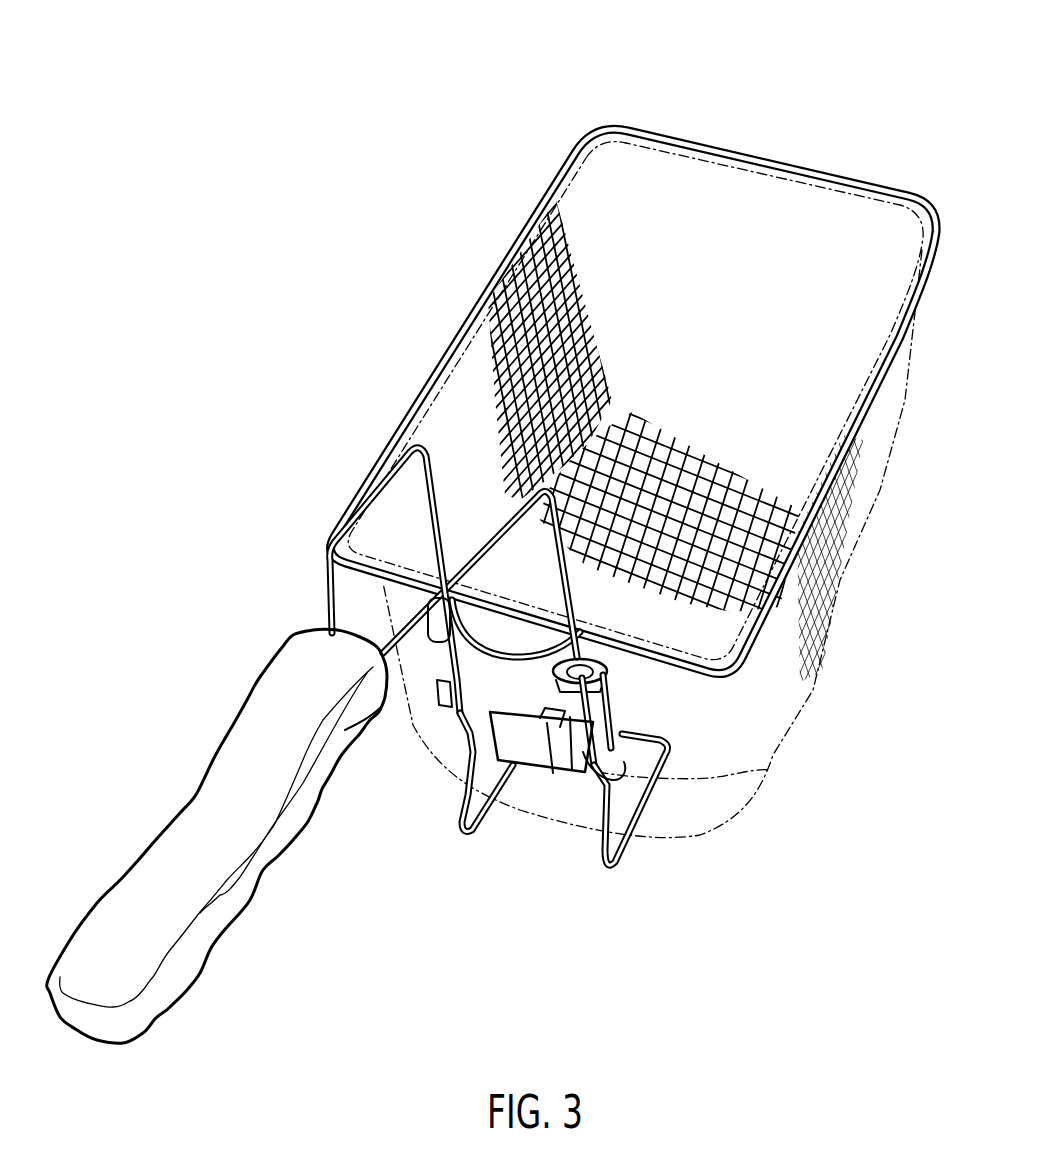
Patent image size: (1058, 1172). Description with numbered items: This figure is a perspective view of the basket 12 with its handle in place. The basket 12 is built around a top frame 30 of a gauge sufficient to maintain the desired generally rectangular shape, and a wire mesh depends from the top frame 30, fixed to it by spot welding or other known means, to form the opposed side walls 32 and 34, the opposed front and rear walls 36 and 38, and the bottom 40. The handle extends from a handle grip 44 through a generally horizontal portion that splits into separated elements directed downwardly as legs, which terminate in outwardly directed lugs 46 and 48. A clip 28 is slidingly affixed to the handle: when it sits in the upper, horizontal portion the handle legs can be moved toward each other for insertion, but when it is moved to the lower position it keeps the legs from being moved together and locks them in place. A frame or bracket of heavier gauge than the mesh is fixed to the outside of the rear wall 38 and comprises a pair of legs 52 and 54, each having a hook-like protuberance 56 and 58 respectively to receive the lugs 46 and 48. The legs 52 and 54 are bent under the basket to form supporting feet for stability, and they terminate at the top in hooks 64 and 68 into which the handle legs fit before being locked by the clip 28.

The basket 12 is at (634, 422).
The clip 28 is at (540, 658).
The top frame 30 is at (578, 152).
The side wall 32 is at (842, 522).
The side wall 34 is at (548, 315).
The front wall 36 is at (770, 235).
The rear wall 38 is at (763, 773).
The bottom 40 is at (703, 540).
The handle grip 44 is at (220, 836).
The lug 46 is at (393, 703).
The lug 48 is at (622, 767).
The leg 52 is at (370, 660).
The leg 54 is at (620, 700).
The hook-like protuberance 56 is at (458, 752).
The hook-like protuberance 58 is at (643, 763).
The hook 64 is at (604, 678).
The hook 68 is at (410, 647).